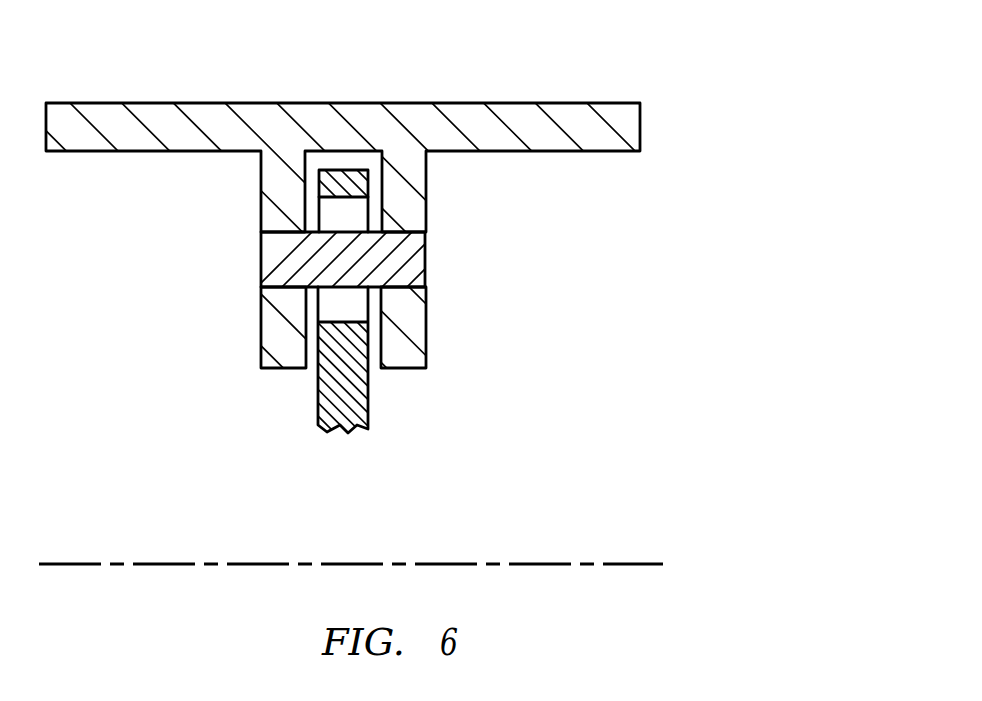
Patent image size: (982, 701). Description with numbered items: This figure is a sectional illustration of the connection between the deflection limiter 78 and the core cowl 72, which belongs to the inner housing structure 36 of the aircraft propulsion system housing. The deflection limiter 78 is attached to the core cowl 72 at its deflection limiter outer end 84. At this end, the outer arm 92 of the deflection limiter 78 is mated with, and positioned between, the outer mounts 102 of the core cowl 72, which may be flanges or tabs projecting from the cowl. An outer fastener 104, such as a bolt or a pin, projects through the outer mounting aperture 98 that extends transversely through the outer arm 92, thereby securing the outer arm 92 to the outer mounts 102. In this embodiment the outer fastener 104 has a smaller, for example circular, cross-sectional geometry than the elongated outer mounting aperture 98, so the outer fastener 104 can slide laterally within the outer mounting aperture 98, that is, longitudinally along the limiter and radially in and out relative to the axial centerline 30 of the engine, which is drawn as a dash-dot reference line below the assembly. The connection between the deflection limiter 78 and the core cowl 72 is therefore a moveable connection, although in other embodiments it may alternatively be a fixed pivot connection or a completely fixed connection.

The axial centerline 30 is at (645, 564).
The inner housing structure 36 is at (475, 221).
The core cowl 72 is at (548, 103).
The deflection limiter 78 is at (328, 445).
The deflection limiter outer end 84 is at (345, 168).
The outer arm 92 is at (368, 395).
The outer mounting aperture 98 is at (354, 213).
The outer mounts 102 is at (260, 331).
The outer fastener 104 is at (427, 254).